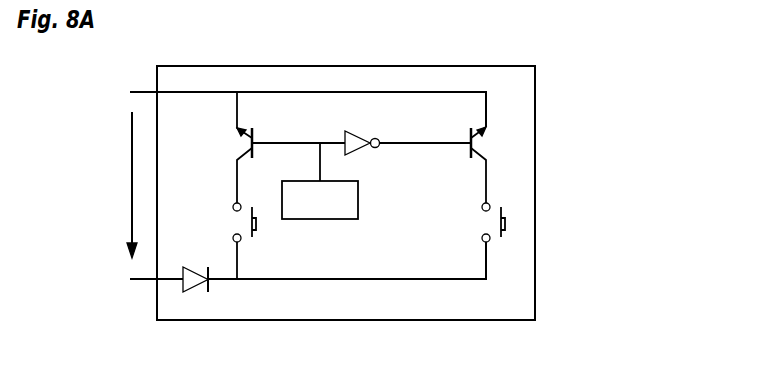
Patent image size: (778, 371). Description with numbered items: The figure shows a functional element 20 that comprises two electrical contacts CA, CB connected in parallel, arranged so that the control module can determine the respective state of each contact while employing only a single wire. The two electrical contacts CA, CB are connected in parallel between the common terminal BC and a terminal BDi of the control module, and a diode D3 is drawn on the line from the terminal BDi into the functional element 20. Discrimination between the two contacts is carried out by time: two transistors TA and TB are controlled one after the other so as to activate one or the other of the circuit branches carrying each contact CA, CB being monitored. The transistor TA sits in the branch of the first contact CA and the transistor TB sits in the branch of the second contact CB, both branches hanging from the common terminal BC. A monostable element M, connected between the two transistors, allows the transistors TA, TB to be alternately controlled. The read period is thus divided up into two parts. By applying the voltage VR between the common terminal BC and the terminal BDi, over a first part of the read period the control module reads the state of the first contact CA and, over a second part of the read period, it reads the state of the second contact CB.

The functional element 20 is at (535, 113).
The common terminal BC is at (291, 104).
The terminal BDi is at (289, 265).
The voltage VR is at (118, 185).
The diode D3 is at (190, 270).
The transistor TA is at (279, 147).
The transistor TB is at (490, 165).
The monostable element M is at (320, 181).
The electrical contact CA is at (230, 241).
The electrical contact CB is at (480, 222).